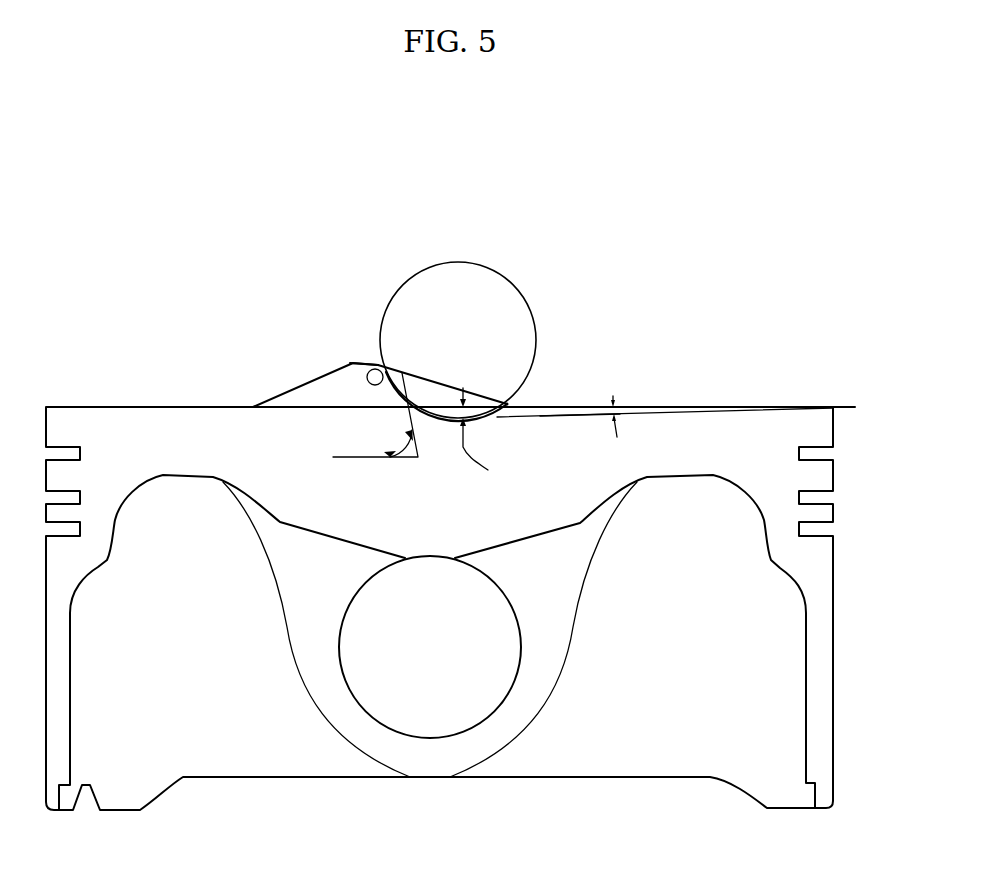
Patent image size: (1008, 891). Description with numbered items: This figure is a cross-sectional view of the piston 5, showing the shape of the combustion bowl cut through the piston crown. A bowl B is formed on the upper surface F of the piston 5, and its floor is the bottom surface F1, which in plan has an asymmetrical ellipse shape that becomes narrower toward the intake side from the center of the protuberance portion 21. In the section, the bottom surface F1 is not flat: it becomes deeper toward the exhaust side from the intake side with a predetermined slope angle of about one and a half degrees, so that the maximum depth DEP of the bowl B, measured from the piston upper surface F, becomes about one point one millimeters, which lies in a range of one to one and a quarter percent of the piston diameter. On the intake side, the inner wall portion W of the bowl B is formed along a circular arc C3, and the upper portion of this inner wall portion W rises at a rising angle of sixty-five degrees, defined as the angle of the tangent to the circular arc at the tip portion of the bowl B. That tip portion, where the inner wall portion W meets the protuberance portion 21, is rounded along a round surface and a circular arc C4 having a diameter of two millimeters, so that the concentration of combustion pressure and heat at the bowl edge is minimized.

The piston 5 is at (823, 570).
The protuberance portion 21 is at (306, 382).
The circular arc C4 is at (358, 362).
The inner wall portion W is at (411, 361).
The circular arc C3 is at (510, 278).
The bowl B is at (518, 405).
The upper surface F is at (766, 396).
The bottom surface F1 is at (583, 398).
The maximum depth DEP is at (501, 438).